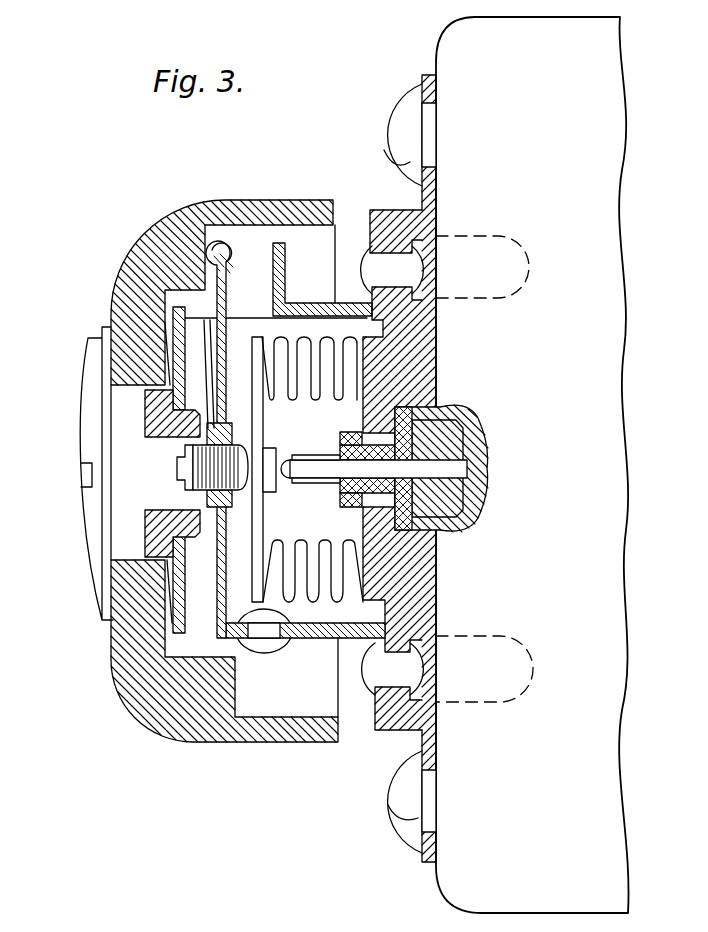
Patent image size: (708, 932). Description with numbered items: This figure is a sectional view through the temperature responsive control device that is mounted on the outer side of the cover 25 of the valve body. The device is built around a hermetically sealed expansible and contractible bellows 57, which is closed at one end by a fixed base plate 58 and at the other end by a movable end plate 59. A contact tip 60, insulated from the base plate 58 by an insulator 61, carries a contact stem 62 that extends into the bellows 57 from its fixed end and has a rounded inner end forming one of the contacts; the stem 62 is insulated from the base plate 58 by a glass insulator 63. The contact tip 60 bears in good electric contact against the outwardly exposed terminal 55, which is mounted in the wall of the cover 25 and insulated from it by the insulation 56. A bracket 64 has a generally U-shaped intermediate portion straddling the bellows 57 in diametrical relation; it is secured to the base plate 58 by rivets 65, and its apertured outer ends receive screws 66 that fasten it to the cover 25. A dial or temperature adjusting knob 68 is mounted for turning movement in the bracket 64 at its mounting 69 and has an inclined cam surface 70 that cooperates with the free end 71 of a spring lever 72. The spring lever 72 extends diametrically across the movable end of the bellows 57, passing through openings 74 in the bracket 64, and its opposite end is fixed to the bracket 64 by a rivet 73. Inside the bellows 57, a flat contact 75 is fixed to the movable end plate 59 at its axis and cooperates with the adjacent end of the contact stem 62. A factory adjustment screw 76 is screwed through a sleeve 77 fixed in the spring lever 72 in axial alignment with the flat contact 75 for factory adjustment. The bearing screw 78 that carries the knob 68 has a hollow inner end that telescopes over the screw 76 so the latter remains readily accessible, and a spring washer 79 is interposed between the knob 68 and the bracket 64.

The cover 25 is at (585, 122).
The terminal 55 is at (487, 423).
The insulation 56 is at (462, 408).
The bellows 57 is at (279, 471).
The base plate 58 is at (438, 568).
The movable end plate 59 is at (257, 522).
The contact tip 60 is at (460, 500).
The insulator 61 is at (428, 383).
The contact stem 62 is at (292, 458).
The glass insulator 63 is at (352, 443).
The bracket 64 is at (438, 321).
The rivets 65 is at (397, 265).
The screws 66 is at (403, 107).
The temperature adjusting knob 68 is at (125, 262).
The knob mounting 69 is at (145, 405).
The cam surface 70 is at (130, 245).
The free end 71 is at (220, 252).
The spring lever 72 is at (226, 292).
The rivet 73 is at (262, 638).
The openings 74 is at (113, 296).
The flat contact 75 is at (272, 490).
The factory adjustment screw 76 is at (177, 460).
The sleeve 77 is at (157, 517).
The bearing screw 78 is at (82, 438).
The spring washer 79 is at (166, 369).